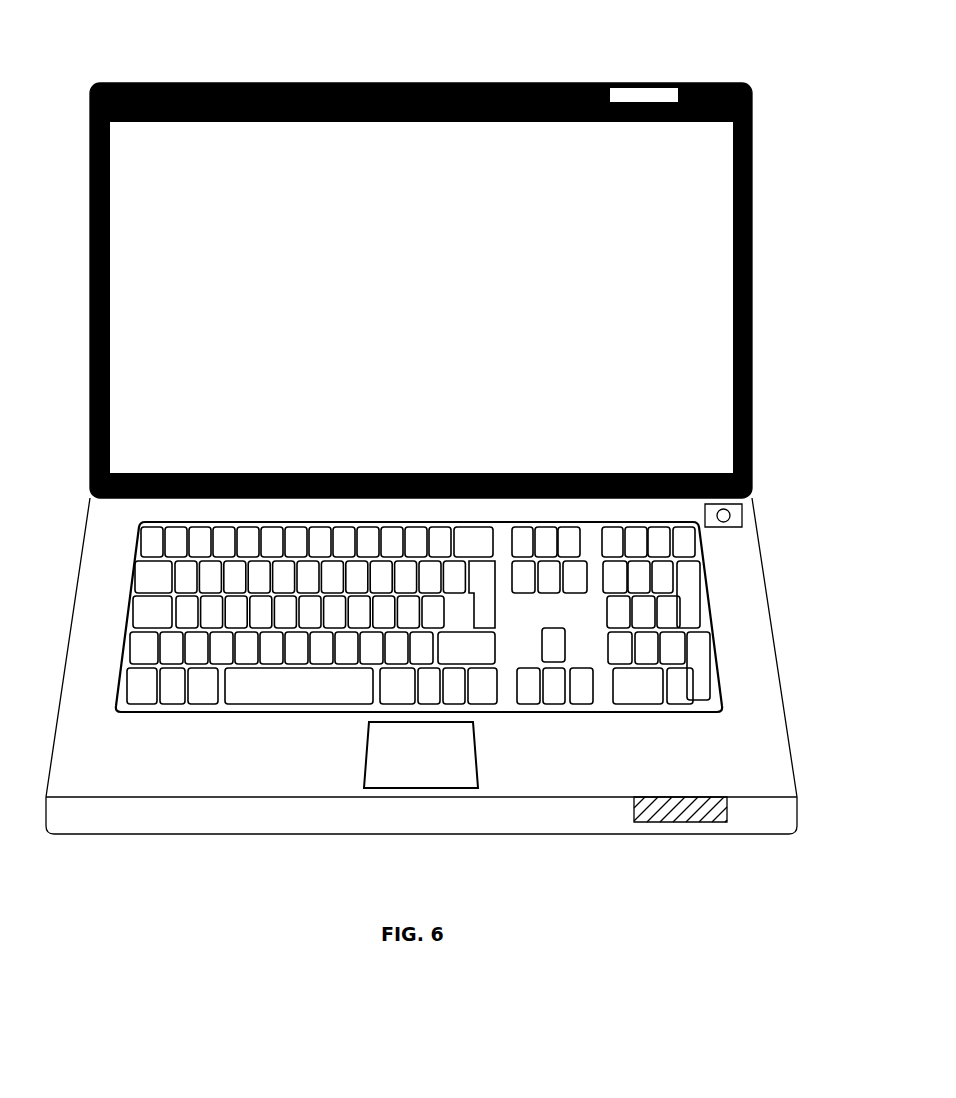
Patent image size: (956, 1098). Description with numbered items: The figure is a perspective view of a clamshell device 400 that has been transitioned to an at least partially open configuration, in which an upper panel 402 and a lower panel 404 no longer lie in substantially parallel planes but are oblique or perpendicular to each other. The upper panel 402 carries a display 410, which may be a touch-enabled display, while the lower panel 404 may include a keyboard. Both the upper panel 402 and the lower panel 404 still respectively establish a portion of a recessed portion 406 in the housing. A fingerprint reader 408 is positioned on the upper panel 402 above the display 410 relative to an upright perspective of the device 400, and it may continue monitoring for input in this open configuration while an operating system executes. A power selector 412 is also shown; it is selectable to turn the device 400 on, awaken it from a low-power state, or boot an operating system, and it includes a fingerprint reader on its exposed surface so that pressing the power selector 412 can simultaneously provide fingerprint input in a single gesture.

The device 400 is at (794, 66).
The upper panel 402 is at (458, 278).
The lower panel 404 is at (443, 661).
The recessed portion 406 is at (728, 814).
The fingerprint reader 408 is at (616, 86).
The display 410 is at (152, 155).
The power selector 412 is at (743, 512).